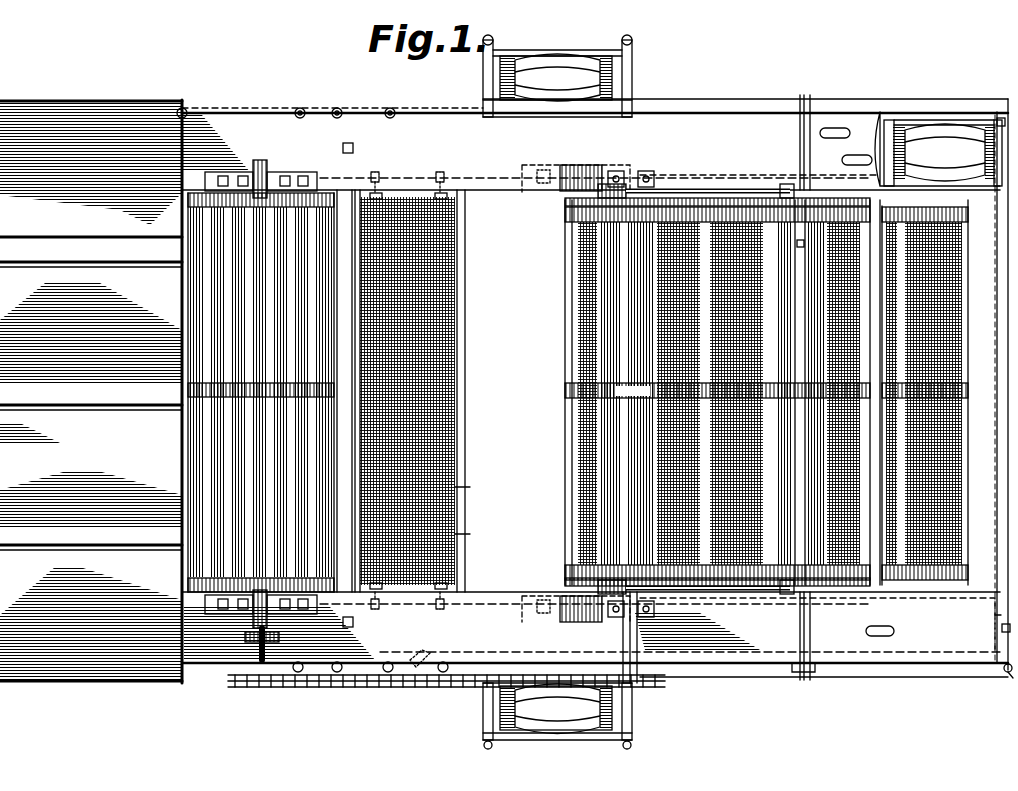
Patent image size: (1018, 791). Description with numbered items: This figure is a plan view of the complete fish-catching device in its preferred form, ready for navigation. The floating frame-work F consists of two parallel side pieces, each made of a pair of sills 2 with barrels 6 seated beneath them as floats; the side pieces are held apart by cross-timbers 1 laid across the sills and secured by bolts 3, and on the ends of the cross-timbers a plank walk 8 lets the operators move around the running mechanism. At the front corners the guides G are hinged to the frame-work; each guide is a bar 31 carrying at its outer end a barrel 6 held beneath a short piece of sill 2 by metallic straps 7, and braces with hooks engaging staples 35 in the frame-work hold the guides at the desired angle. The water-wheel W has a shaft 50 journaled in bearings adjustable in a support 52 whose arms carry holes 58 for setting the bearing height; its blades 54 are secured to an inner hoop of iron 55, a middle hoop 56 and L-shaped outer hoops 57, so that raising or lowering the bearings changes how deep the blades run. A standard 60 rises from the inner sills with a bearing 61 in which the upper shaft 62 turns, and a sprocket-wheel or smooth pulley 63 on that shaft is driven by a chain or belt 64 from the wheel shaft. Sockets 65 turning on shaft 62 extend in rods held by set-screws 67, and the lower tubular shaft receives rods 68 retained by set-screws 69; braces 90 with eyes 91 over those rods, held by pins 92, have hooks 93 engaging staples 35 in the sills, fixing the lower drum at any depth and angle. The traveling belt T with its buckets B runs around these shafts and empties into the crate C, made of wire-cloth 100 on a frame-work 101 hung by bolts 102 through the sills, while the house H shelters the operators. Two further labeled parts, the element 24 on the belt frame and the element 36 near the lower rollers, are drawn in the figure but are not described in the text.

The cross-timbers 1 is at (366, 740).
The sills 2 is at (590, 48).
The bolts 3 is at (353, 148).
The barrels 6 is at (540, 52).
The metallic straps 7 is at (565, 50).
The plank walk 8 is at (505, 392).
The screen frame 24 is at (568, 215).
The bar 31 is at (700, 110).
The staples 35 is at (333, 110).
The rollers 36 is at (337, 672).
The shaft 50 is at (262, 165).
The support 52 is at (276, 176).
The blades 54 is at (218, 392).
The hoop of iron 55 is at (292, 392).
The hoop 56 is at (334, 390).
The outer hoops 57 is at (326, 196).
The holes 58 is at (282, 614).
The standard 60 is at (672, 170).
The bearing 61 is at (616, 171).
The shaft 62 is at (795, 476).
The sprocket-wheel or smooth pulley 63 is at (660, 683).
The chain or belt 64 is at (380, 672).
The socket 65 is at (610, 196).
The set-screw 67 is at (717, 389).
The rods 68 is at (810, 606).
The set-screws 69 is at (797, 247).
The braces 90 is at (658, 112).
The eyes 91 is at (804, 674).
The pins 92 is at (760, 290).
The hooks 93 is at (443, 114).
The wire-cloth 100 is at (470, 488).
The frame-work 101 is at (470, 535).
The bolts 102 is at (595, 391).
The buckets B is at (566, 348).
The crate C is at (416, 391).
The floating frame-work F is at (404, 690).
The guides G is at (752, 684).
The house H is at (91, 391).
The traveling belt T is at (790, 222).
The water-wheel W is at (333, 287).